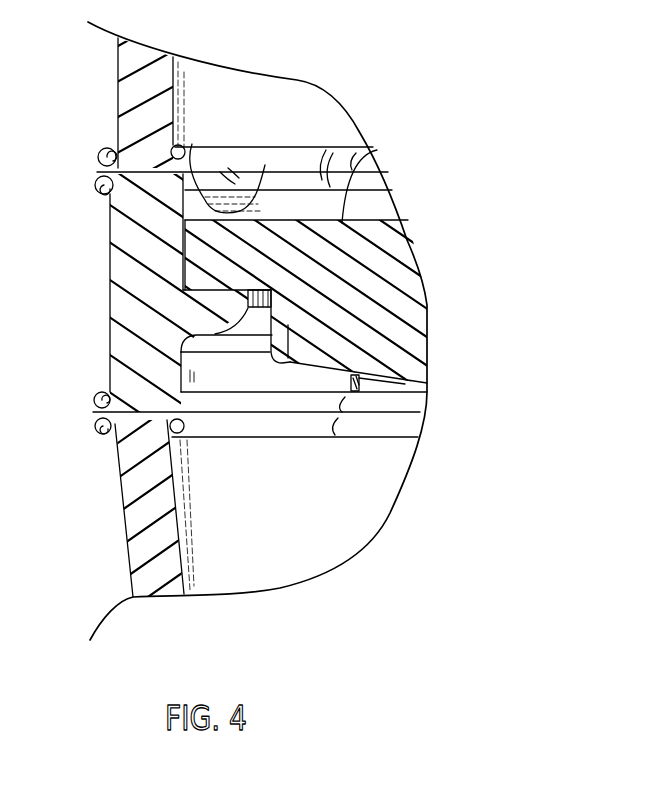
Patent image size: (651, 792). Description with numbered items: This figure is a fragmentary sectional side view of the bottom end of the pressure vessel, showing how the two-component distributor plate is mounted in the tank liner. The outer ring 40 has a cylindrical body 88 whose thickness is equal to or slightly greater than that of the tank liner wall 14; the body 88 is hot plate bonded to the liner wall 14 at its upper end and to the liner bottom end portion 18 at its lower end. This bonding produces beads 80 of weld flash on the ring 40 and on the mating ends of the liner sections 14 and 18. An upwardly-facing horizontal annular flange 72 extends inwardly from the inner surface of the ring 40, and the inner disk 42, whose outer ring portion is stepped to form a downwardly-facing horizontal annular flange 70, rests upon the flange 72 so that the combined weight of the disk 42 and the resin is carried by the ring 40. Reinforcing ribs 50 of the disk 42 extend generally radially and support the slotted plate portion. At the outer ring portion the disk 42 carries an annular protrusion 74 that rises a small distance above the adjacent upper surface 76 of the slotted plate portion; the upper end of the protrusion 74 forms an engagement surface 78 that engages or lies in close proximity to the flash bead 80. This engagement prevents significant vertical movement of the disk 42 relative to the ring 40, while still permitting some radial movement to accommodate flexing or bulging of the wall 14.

The tank liner wall 14 is at (118, 87).
The liner bottom end portion 18 is at (132, 556).
The outer ring 40 is at (103, 247).
The inner disk 42 is at (402, 210).
The reinforcing ribs 50 is at (420, 366).
The downwardly-facing horizontal annular flange 70 is at (268, 288).
The upwardly-facing horizontal annular flange 72 is at (213, 307).
The annular protrusion 74 is at (265, 165).
The upper surface 76 is at (377, 150).
The engagement surface 78 is at (250, 166).
The flash bead 80 is at (97, 155).
The cylindrical body 88 is at (120, 352).